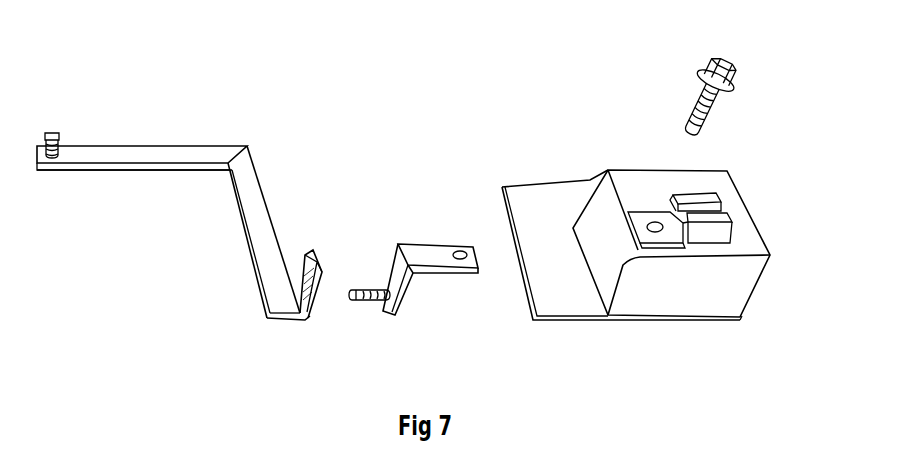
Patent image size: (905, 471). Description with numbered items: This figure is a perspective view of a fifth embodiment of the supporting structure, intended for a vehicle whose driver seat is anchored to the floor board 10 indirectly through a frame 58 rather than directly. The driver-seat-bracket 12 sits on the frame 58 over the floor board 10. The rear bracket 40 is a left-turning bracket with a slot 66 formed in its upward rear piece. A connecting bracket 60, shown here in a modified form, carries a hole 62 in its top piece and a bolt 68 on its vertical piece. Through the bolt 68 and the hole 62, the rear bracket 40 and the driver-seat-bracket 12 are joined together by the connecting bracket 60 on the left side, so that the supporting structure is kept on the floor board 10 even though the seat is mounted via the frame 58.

The floor board 10 is at (535, 225).
The driver-seat-bracket 12 is at (707, 200).
The rear bracket 40 is at (205, 153).
The frame 58 is at (727, 295).
The connecting bracket 60 is at (412, 250).
The hole 62 is at (462, 250).
The slot 66 is at (298, 262).
The bolt 68 is at (363, 290).